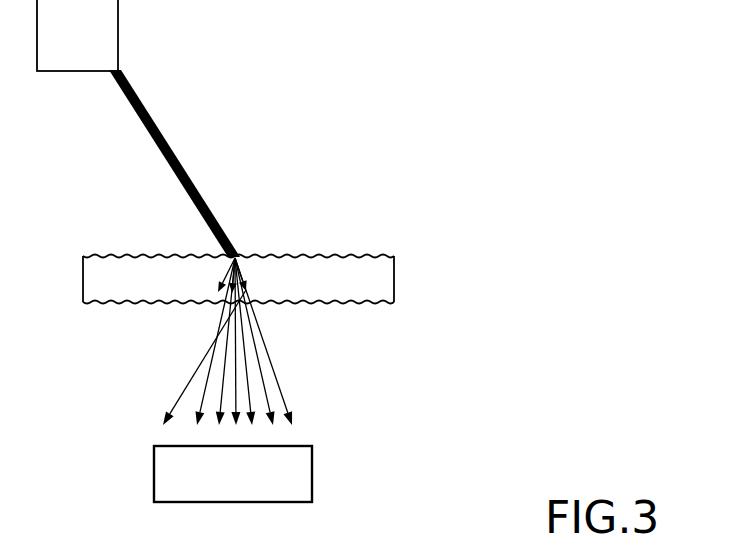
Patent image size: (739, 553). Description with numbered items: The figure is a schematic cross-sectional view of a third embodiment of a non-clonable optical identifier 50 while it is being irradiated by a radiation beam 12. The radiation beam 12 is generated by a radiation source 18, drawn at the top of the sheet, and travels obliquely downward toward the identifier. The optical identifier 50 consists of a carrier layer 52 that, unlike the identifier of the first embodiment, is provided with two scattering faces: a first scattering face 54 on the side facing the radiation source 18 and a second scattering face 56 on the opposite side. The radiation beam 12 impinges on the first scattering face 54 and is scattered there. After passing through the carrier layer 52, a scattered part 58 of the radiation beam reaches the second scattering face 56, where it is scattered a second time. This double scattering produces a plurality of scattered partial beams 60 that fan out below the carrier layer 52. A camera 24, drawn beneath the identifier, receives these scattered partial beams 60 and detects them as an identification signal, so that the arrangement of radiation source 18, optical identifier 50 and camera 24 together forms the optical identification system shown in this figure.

The radiation source 18 is at (118, 30).
The radiation beam 12 is at (150, 118).
The non-clonable optical identifier 50 is at (255, 280).
The carrier layer 52 is at (83, 280).
The first scattering face 54 is at (128, 254).
The second scattering face 56 is at (95, 304).
The scattered part of the radiation beam 58 is at (265, 267).
The scattered partial beams 60 is at (322, 363).
The camera 24 is at (312, 476).